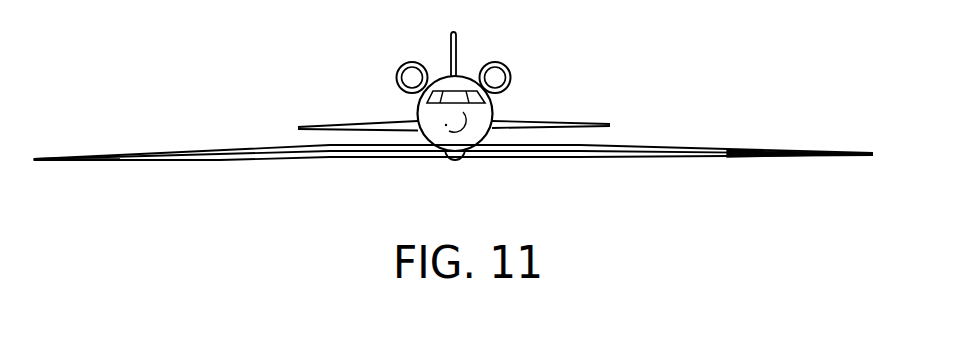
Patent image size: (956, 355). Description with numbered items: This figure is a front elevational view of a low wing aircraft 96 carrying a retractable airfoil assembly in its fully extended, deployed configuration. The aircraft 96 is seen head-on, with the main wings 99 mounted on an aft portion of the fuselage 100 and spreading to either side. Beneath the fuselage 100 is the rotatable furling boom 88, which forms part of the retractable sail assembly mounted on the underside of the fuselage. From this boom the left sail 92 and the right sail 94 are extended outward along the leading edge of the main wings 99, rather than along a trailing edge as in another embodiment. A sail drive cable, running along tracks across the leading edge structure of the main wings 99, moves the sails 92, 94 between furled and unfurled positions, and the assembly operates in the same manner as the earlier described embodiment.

The rotatable furling boom 88 is at (455, 161).
The left sail 92 is at (663, 150).
The right sail 94 is at (225, 152).
The aircraft 96 is at (543, 84).
The main wings 99 is at (345, 157).
The fuselage 100 is at (416, 102).